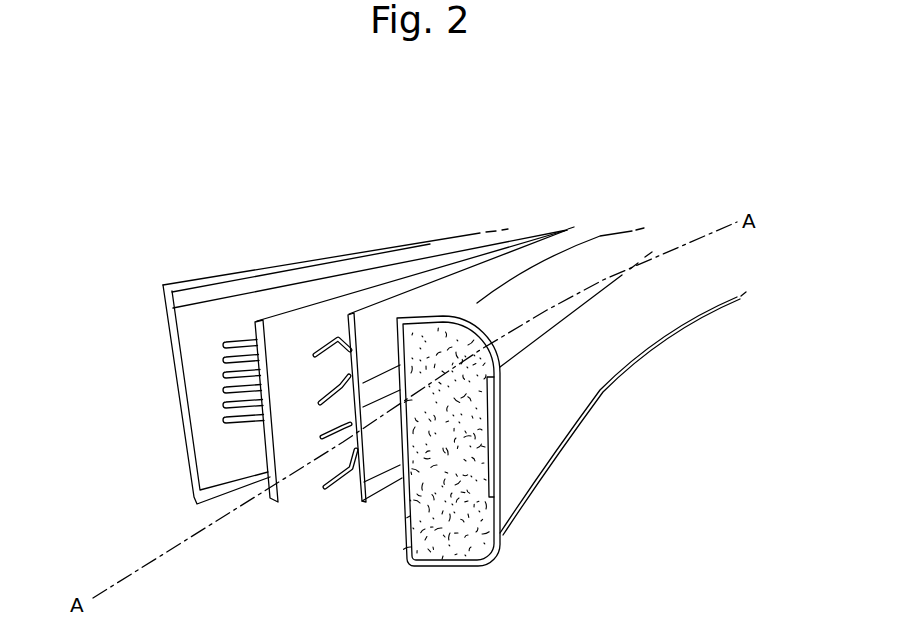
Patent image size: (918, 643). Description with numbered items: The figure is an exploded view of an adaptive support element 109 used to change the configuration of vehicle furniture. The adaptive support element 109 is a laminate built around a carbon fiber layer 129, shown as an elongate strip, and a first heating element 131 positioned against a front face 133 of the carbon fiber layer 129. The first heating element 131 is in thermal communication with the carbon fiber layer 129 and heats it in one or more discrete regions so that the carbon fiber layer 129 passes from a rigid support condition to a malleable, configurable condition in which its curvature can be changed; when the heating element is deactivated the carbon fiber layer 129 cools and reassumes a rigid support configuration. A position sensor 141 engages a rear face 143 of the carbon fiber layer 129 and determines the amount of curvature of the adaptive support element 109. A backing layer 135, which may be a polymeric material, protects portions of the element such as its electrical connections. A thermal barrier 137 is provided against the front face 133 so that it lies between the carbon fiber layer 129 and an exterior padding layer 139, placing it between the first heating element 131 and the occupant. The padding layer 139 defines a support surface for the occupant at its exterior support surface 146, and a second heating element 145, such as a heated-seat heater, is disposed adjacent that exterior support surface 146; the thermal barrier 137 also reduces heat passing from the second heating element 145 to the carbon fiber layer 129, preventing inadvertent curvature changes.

The adaptive support element 109 is at (650, 155).
The carbon fiber layer 129 is at (287, 333).
The first heating element 131 is at (327, 340).
The front face 133 is at (292, 458).
The backing layer 135 is at (190, 320).
The thermal barrier 137 is at (380, 318).
The padding layer 139 is at (455, 347).
The position sensor 141 is at (232, 340).
The rear face 143 is at (262, 452).
The second heating element 145 is at (497, 447).
The exterior support surface 146 is at (565, 360).